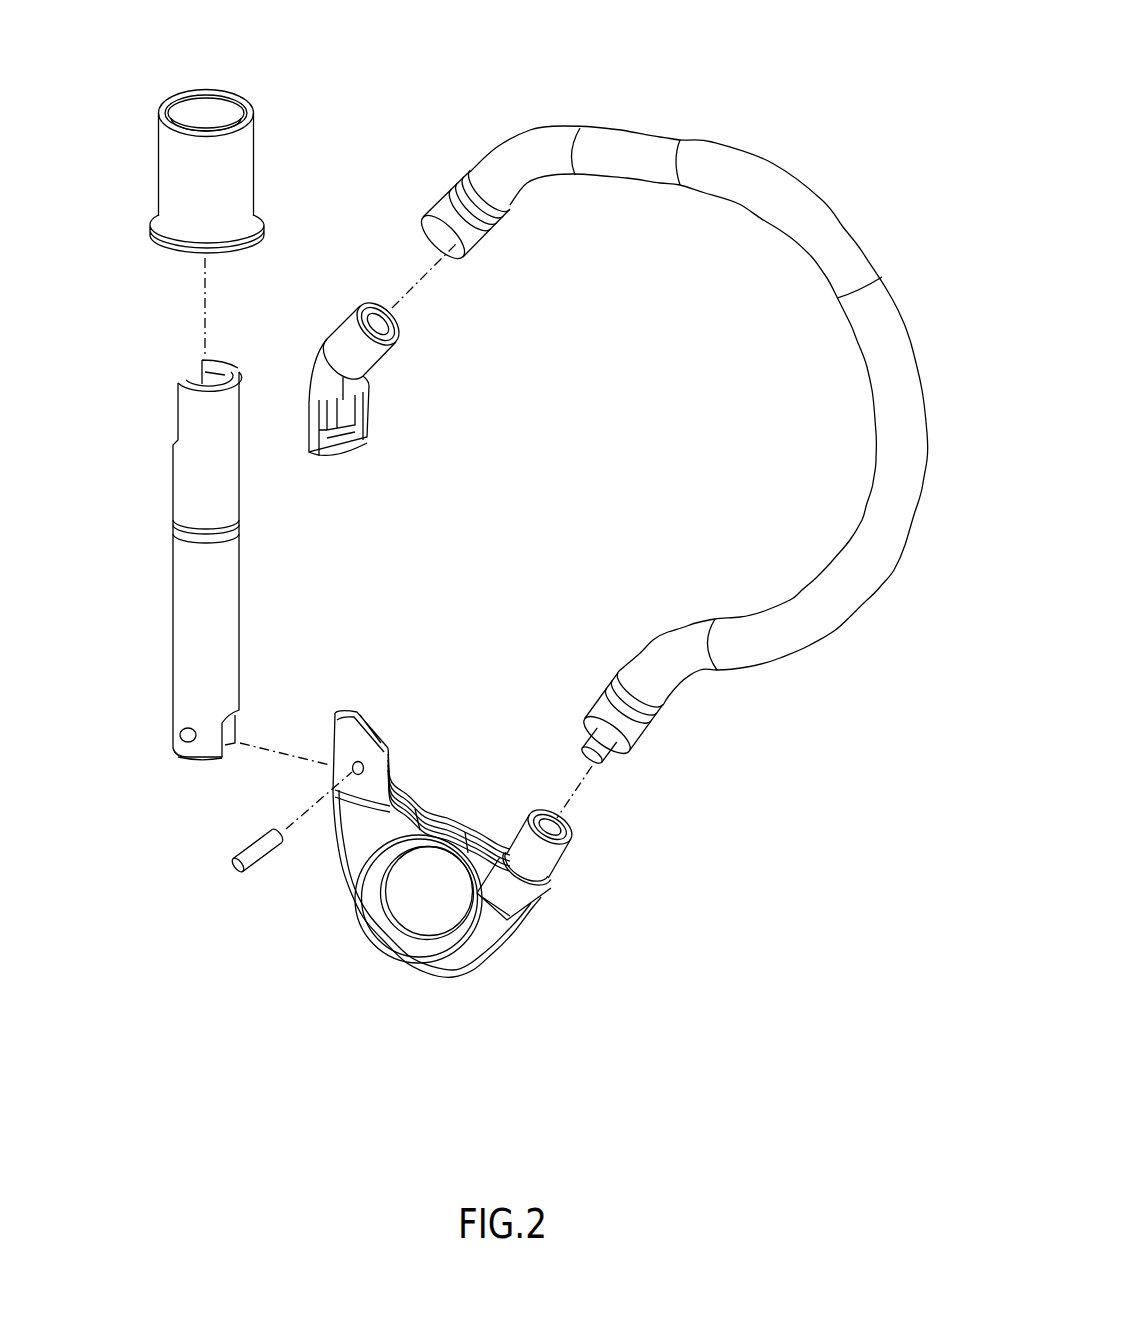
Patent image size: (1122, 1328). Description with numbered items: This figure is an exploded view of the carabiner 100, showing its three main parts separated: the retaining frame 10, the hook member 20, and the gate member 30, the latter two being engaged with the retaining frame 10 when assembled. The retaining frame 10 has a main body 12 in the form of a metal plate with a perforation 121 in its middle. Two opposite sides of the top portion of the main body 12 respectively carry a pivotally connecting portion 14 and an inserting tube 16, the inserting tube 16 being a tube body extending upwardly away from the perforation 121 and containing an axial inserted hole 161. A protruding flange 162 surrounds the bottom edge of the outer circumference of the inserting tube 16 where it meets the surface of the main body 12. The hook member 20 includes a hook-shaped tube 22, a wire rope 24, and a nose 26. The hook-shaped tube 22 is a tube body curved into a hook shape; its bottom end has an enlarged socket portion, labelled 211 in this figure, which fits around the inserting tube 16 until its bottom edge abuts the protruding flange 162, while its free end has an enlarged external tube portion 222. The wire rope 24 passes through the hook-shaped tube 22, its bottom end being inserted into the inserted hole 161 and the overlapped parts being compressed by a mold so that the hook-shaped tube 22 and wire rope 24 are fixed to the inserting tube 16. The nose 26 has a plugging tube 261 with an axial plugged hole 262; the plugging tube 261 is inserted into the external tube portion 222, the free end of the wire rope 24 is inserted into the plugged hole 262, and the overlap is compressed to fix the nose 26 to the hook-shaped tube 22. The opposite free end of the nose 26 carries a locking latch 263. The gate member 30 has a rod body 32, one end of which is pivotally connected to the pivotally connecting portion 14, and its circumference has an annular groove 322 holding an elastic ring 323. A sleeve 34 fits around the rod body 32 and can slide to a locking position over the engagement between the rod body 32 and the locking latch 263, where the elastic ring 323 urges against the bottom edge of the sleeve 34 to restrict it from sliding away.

The carabiner 100 is at (762, 72).
The retaining frame 10 is at (482, 977).
The main body 12 is at (345, 827).
The perforation 121 is at (408, 898).
The pivotally connecting portion 14 is at (363, 730).
The inserting tube 16 is at (552, 857).
The inserted hole 161 is at (552, 827).
The protruding flange 162 is at (525, 877).
The hook member 20 is at (895, 577).
The hook-shaped tube 22 is at (880, 348).
The external tube portion 222 is at (475, 238).
The lower end connector 211 is at (597, 708).
The wire rope 24 is at (588, 752).
The nose 26 is at (325, 370).
The plugging tube 261 is at (353, 338).
The plugged hole 262 is at (382, 323).
The locking latch 263 is at (343, 417).
The gate member 30 is at (95, 202).
The rod body 32 is at (190, 465).
The annular groove 322 is at (208, 533).
The elastic ring 323 is at (213, 537).
The sleeve 34 is at (178, 178).